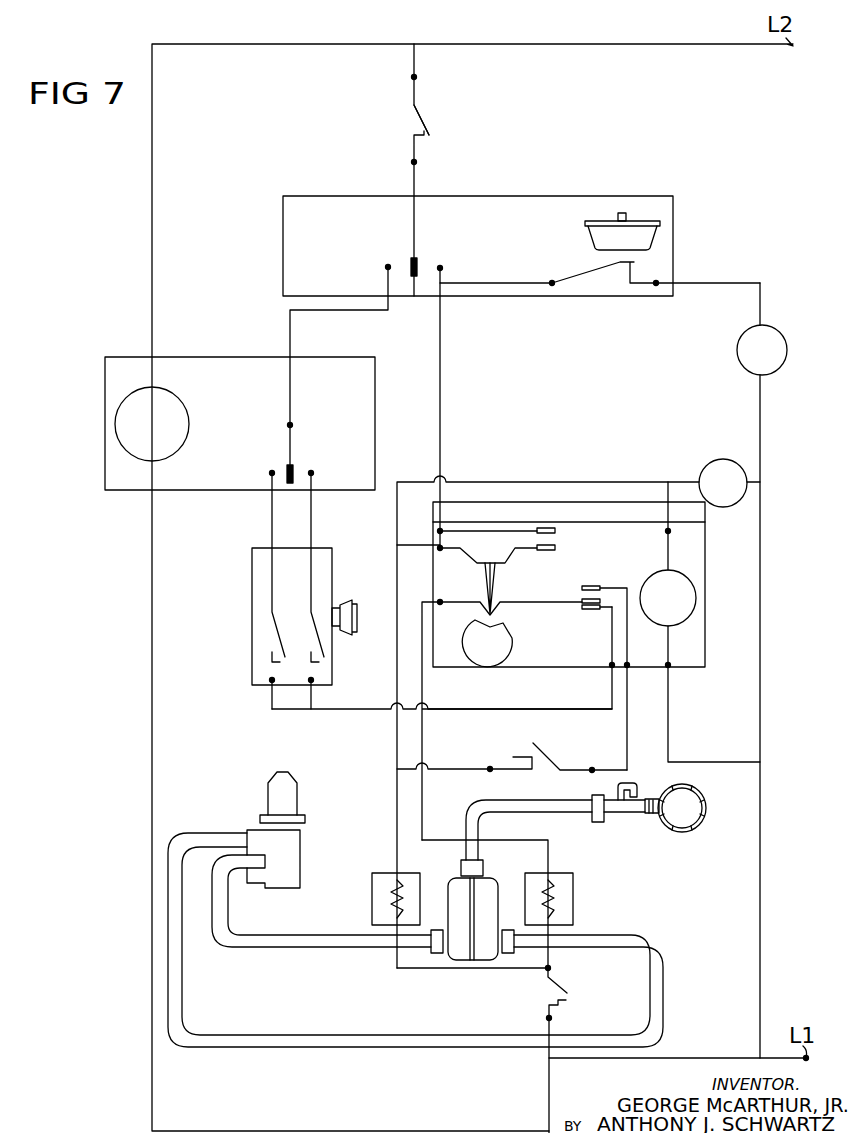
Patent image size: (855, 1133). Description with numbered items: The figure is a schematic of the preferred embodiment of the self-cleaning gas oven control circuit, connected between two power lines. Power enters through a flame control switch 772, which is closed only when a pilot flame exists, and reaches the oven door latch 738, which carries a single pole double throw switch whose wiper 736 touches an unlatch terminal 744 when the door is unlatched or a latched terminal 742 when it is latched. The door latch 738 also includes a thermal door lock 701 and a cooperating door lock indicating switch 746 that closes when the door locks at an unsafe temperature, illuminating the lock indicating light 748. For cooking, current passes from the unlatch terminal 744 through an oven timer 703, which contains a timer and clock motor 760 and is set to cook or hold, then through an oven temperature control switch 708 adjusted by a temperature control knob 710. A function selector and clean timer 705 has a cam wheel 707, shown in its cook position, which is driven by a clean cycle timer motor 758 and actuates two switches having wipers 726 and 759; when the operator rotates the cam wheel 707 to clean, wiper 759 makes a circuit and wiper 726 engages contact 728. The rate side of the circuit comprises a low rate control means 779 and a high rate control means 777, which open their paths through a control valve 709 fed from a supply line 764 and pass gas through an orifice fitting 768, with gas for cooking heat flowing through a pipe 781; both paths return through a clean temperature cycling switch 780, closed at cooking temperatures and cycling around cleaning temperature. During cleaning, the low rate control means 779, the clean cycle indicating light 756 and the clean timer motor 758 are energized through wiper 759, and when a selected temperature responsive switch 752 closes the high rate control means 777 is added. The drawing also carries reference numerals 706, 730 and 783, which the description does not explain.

The thermal door lock 701 is at (640, 237).
The oven timer 703 is at (215, 367).
The function selector and clean timer 705 is at (556, 500).
The hold switch contact 706 is at (275, 640).
The cam wheel 707 is at (484, 650).
The oven temperature control switch 708 is at (260, 634).
The control valve 709 is at (458, 952).
The temperature control knob 710 is at (352, 606).
The wiper 726 is at (554, 604).
The contact 728 is at (590, 585).
The timer contact 730 is at (590, 612).
The wiper 736 is at (412, 240).
The oven door latch 738 is at (473, 213).
The latched terminal 742 is at (430, 287).
The unlatch terminal 744 is at (385, 290).
The door lock indicating switch 746 is at (616, 282).
The lock indicating light 748 is at (737, 348).
The selected temperature responsive switch 752 is at (556, 756).
The clean cycle indicating light 756 is at (705, 468).
The clean cycle timer motor 758 is at (697, 588).
The wiper 759 is at (512, 552).
The timer and clock motor 760 is at (115, 416).
The supply line 764 is at (699, 826).
The orifice fitting 768 is at (296, 868).
The flame control switch 772 is at (430, 120).
The high rate control means 777 is at (556, 905).
The low rate control means 779 is at (390, 897).
The clean temperature cycling switch 780 is at (553, 993).
The pipe 781 is at (342, 1042).
The gas tubing 783 is at (303, 940).